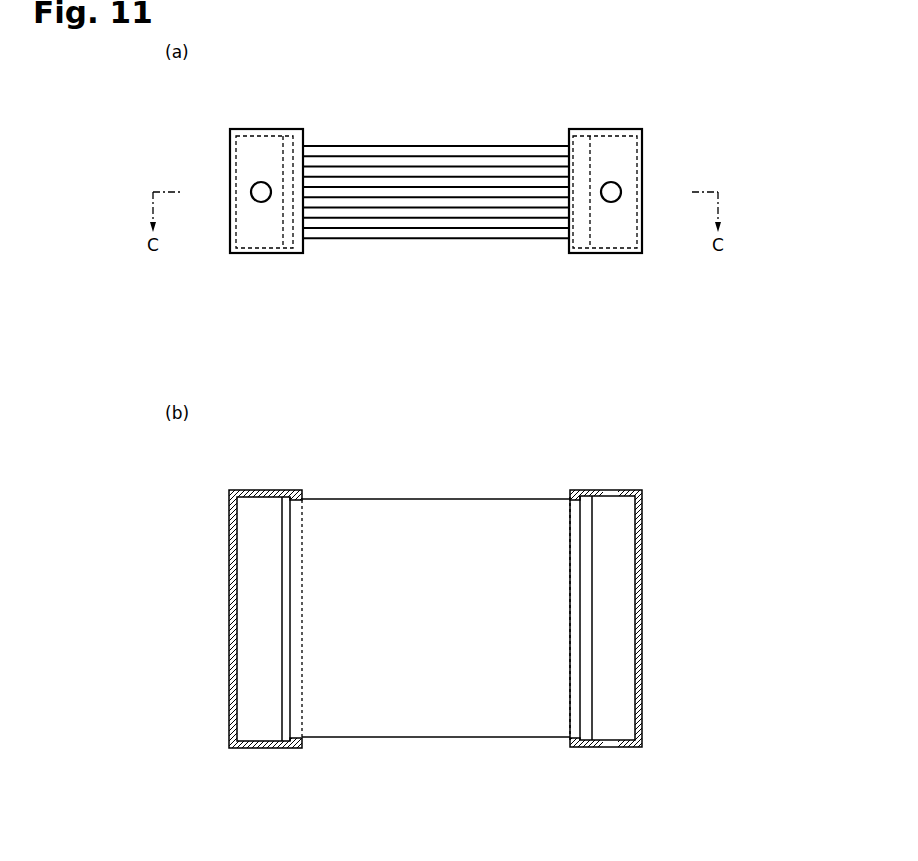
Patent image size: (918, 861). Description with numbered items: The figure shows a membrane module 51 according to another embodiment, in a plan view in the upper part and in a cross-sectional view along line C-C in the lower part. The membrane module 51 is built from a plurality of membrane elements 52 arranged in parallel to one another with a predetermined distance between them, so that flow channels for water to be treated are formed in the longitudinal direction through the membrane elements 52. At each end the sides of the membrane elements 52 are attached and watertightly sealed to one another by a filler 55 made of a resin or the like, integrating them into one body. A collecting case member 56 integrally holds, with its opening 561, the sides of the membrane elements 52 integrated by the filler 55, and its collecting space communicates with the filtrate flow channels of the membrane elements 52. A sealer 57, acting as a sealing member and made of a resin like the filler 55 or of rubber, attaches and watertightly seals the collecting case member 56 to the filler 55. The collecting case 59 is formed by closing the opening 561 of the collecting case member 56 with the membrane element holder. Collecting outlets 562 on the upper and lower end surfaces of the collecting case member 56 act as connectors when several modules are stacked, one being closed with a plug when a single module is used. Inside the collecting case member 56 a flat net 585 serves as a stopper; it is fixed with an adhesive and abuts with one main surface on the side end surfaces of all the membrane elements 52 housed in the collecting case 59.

The membrane module 51 is at (458, 127).
The membrane element 52 is at (396, 236).
The filler 55 is at (542, 660).
The sealer 57 is at (569, 738).
The collecting case member 56 is at (596, 128).
The collecting case 59 is at (638, 117).
The opening 561 is at (569, 497).
The collecting outlet 562 is at (614, 190).
The net 585 is at (591, 228).